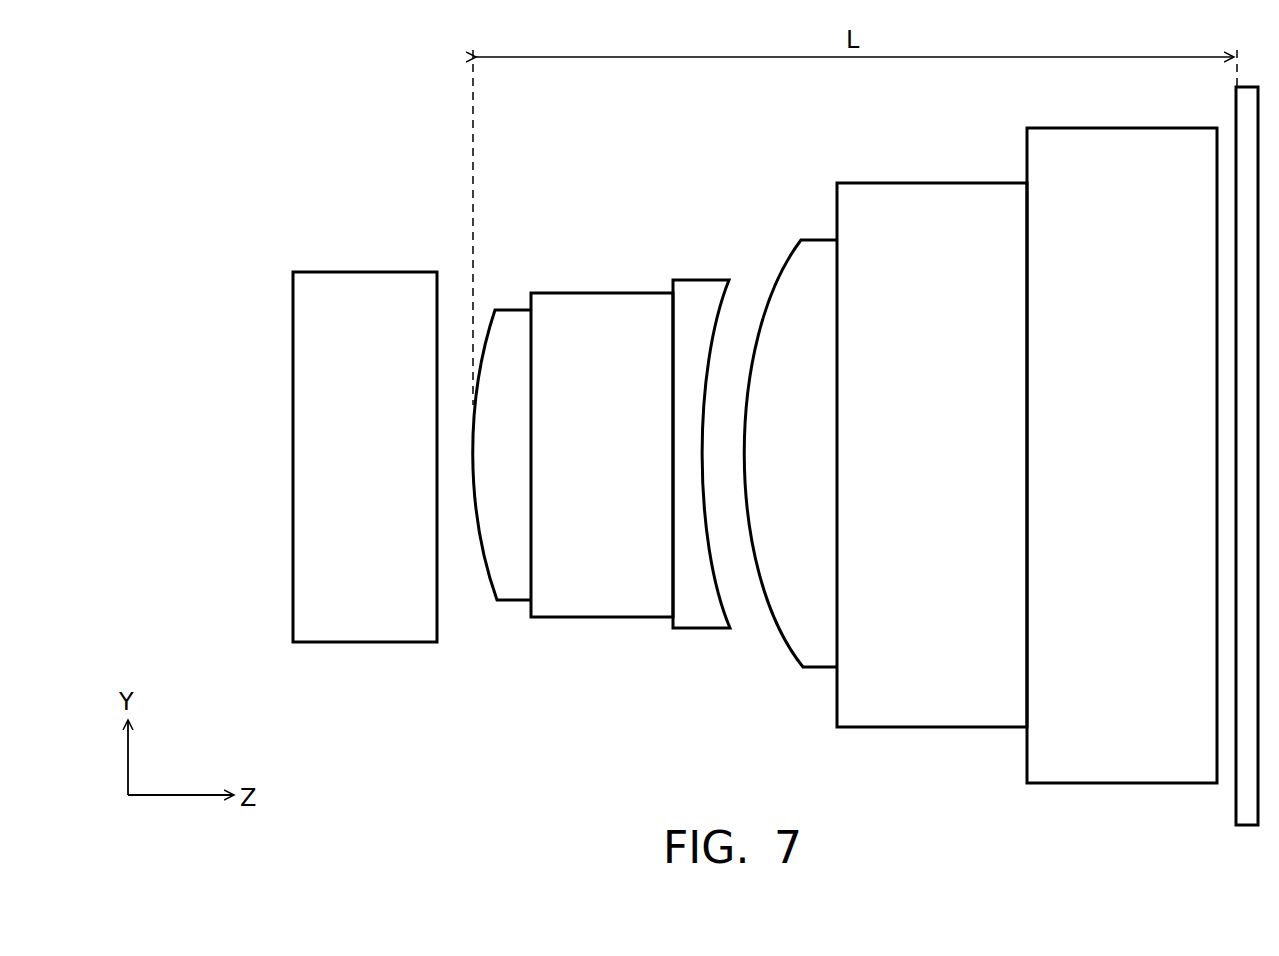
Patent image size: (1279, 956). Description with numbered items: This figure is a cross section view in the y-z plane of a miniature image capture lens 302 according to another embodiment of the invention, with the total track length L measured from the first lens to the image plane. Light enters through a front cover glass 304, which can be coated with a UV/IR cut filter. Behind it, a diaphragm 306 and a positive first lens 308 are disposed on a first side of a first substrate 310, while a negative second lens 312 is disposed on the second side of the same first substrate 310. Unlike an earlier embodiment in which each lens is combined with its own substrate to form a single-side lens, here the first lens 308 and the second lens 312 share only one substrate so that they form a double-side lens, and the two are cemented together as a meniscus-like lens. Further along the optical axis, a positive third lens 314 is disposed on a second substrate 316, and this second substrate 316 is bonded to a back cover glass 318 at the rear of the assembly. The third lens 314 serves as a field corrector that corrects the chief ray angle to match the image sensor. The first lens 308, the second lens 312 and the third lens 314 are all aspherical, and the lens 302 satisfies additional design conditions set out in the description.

The miniature image capture lens 302 is at (231, 189).
The front cover glass 304 is at (367, 643).
The diaphragm 306 is at (512, 296).
The first lens 308 is at (488, 582).
The first substrate 310 is at (603, 618).
The second lens 312 is at (703, 630).
The third lens 314 is at (785, 643).
The second substrate 316 is at (935, 728).
The back cover glass 318 is at (1097, 784).